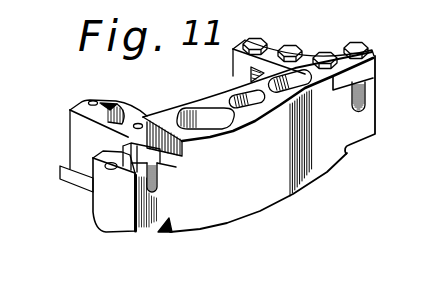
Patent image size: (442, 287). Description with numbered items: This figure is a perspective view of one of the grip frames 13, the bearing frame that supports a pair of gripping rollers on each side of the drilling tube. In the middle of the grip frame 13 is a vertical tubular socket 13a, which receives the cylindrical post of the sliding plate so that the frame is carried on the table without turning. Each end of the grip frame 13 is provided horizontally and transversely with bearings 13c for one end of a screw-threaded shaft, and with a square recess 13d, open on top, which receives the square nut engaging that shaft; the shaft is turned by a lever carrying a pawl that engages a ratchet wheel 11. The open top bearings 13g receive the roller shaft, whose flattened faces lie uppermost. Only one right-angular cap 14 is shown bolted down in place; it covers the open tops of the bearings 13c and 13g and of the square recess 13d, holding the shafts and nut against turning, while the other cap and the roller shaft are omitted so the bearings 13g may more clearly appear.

The ratchet wheel 11 is at (274, 120).
The grip frame 13 is at (258, 142).
The vertical tubular socket 13a is at (236, 98).
The bearings for screw-threaded shaft 13c is at (159, 181).
The square recess 13d is at (71, 132).
The open top bearings 13g is at (249, 74).
The cap 14 is at (336, 46).